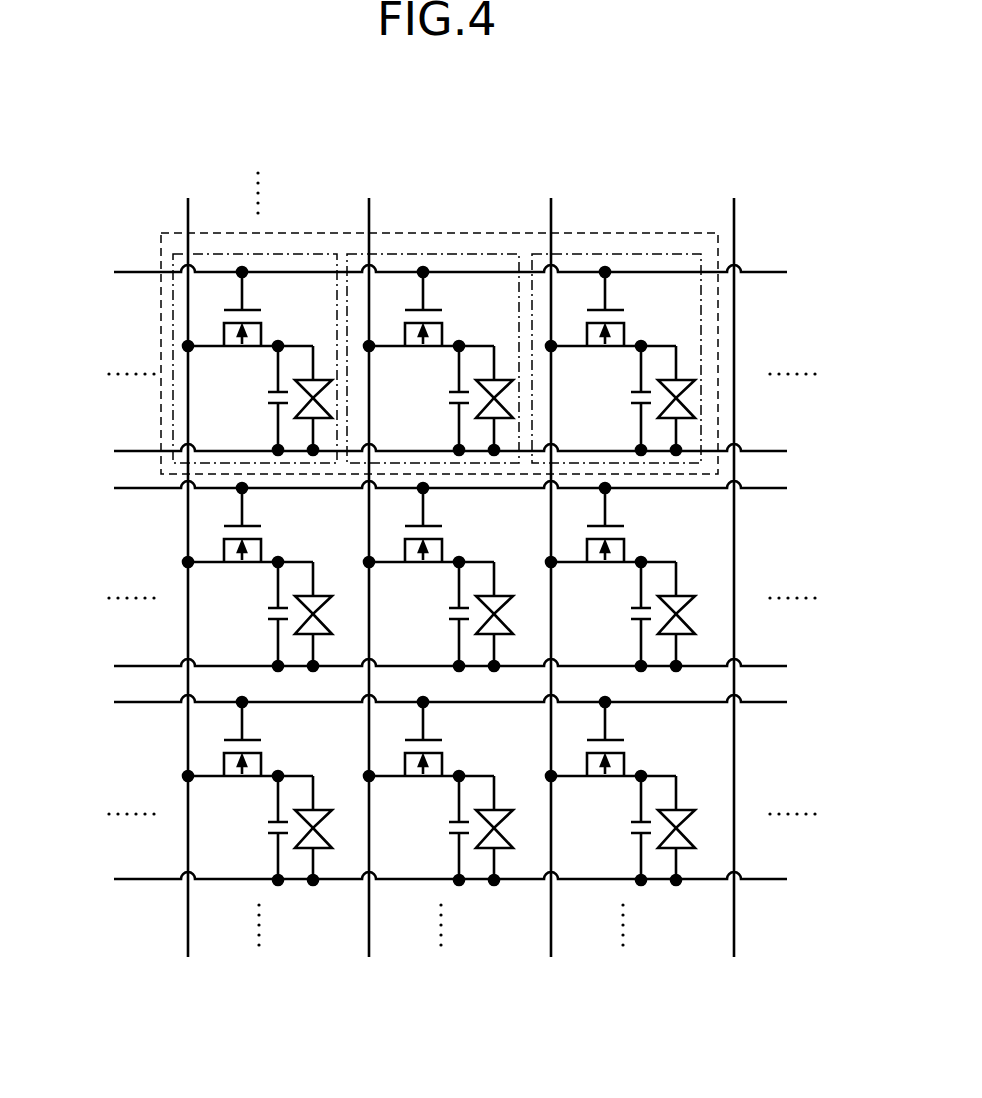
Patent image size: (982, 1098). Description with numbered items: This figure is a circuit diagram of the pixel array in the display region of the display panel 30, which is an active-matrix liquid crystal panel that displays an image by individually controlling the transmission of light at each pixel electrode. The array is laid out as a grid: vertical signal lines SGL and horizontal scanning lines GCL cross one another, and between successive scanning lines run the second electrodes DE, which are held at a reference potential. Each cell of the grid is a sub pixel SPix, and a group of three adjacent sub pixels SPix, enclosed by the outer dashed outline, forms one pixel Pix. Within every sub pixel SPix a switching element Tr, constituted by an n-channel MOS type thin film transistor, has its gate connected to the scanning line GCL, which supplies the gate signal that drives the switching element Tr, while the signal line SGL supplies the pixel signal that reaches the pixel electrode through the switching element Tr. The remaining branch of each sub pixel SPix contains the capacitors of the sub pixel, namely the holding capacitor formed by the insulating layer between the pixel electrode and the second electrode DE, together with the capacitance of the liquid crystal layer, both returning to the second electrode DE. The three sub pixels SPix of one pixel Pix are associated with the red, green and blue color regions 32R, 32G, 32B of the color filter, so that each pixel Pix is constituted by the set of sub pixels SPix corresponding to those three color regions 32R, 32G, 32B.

The display panel 30 is at (705, 165).
The red color region 32R is at (212, 427).
The green color region 32G is at (486, 288).
The blue color region 32B is at (620, 301).
The signal line SGL is at (188, 220).
The scanning line GCL is at (153, 272).
The second electrode DE is at (128, 453).
The pixel Pix is at (720, 244).
The sub pixel SPix is at (304, 254).
The switching element Tr is at (595, 340).